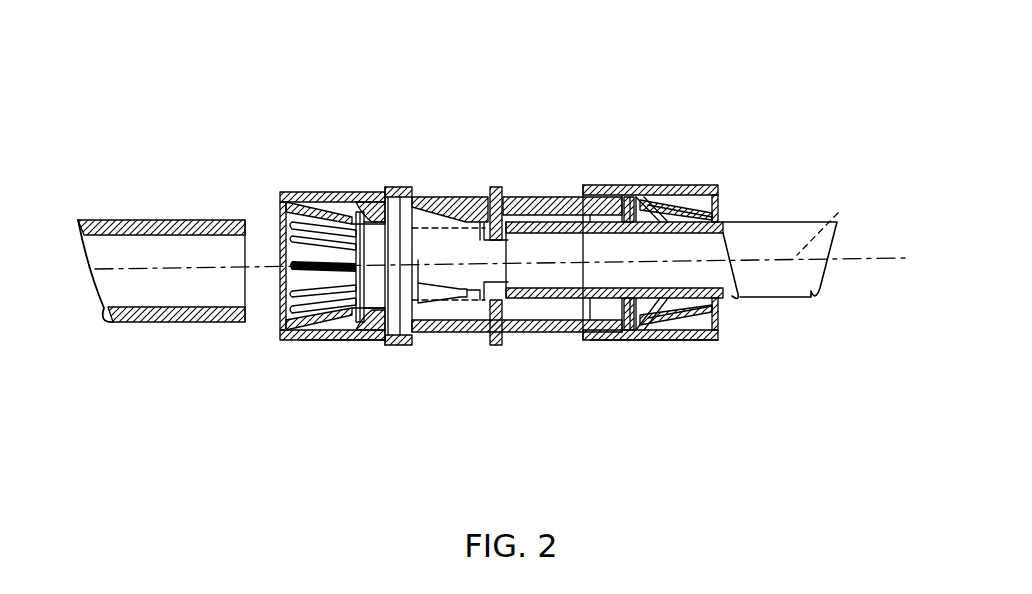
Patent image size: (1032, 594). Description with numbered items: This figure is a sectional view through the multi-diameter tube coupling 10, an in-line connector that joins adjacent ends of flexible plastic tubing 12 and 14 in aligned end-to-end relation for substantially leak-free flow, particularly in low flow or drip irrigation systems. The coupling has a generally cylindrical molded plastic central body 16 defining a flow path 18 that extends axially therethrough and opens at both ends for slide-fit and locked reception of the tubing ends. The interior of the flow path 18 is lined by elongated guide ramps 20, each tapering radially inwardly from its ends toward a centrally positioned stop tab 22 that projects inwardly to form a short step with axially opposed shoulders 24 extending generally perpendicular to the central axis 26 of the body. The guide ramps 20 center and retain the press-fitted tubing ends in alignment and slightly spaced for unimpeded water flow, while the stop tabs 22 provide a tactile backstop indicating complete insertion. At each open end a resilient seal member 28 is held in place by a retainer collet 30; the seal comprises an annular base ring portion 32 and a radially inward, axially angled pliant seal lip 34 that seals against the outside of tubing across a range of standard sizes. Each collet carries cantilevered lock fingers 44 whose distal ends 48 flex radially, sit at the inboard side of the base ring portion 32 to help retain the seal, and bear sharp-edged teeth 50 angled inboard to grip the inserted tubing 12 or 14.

The multi-diameter tube coupling 10 is at (278, 458).
The flexible plastic tubing 12 is at (762, 288).
The flexible plastic tubing 14 is at (132, 325).
The central body 16 is at (420, 195).
The flow path 18 is at (453, 258).
The guide ramp 20 is at (445, 272).
The stop tab 22 is at (510, 251).
The shoulder 24 is at (513, 222).
The central axis 26 is at (838, 212).
The resilient seal member 28 is at (357, 347).
The retainer collet 30 is at (297, 188).
The base ring portion 32 is at (624, 222).
The pliant seal lip 34 is at (373, 193).
The lock finger 44 is at (287, 337).
The distal end 48 is at (345, 342).
The sharp-edged tooth 50 is at (388, 247).